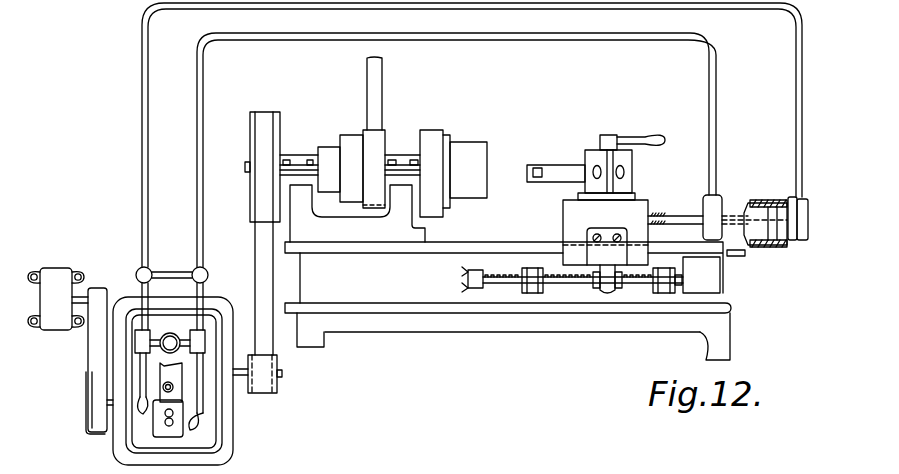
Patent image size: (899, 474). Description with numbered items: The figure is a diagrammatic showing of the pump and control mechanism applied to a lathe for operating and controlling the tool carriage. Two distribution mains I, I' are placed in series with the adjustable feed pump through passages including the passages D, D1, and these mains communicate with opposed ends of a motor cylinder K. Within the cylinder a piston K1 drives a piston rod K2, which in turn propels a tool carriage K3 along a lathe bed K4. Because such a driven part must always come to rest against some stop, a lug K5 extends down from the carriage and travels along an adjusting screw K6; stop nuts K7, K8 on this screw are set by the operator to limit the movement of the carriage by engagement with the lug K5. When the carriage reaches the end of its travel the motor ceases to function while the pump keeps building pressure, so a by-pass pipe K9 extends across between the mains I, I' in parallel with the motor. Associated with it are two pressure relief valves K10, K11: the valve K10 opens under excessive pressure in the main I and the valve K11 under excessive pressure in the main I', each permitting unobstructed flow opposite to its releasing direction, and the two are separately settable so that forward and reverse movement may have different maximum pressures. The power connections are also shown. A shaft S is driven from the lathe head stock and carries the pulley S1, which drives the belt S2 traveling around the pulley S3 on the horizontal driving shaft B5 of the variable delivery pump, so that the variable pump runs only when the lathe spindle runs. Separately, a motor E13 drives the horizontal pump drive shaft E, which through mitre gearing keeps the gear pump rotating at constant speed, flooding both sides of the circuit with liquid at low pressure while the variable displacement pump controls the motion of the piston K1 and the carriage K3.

The distribution main I is at (449, 166).
The distribution main I' is at (456, 181).
The pressure relief valve K10 is at (138, 270).
The pressure relief valve K11 is at (206, 272).
The by-pass pipe K9 is at (169, 271).
The passage D is at (142, 367).
The passage D1 is at (200, 398).
The motor E13 is at (54, 272).
The horizontal pump drive shaft E is at (107, 431).
The shaft S is at (245, 168).
The pulley S1 is at (252, 217).
The belt S2 is at (257, 295).
The pulley S3 is at (283, 376).
The horizontal driving shaft B5 is at (280, 372).
The lathe bed K4 is at (415, 262).
The tool carriage K3 is at (573, 218).
The piston rod K2 is at (670, 216).
The piston K1 is at (770, 215).
The motor cylinder K is at (784, 246).
The adjusting screw K6 is at (500, 285).
The stop nut K8 is at (535, 294).
The lug K5 is at (610, 294).
The stop nut K7 is at (667, 294).